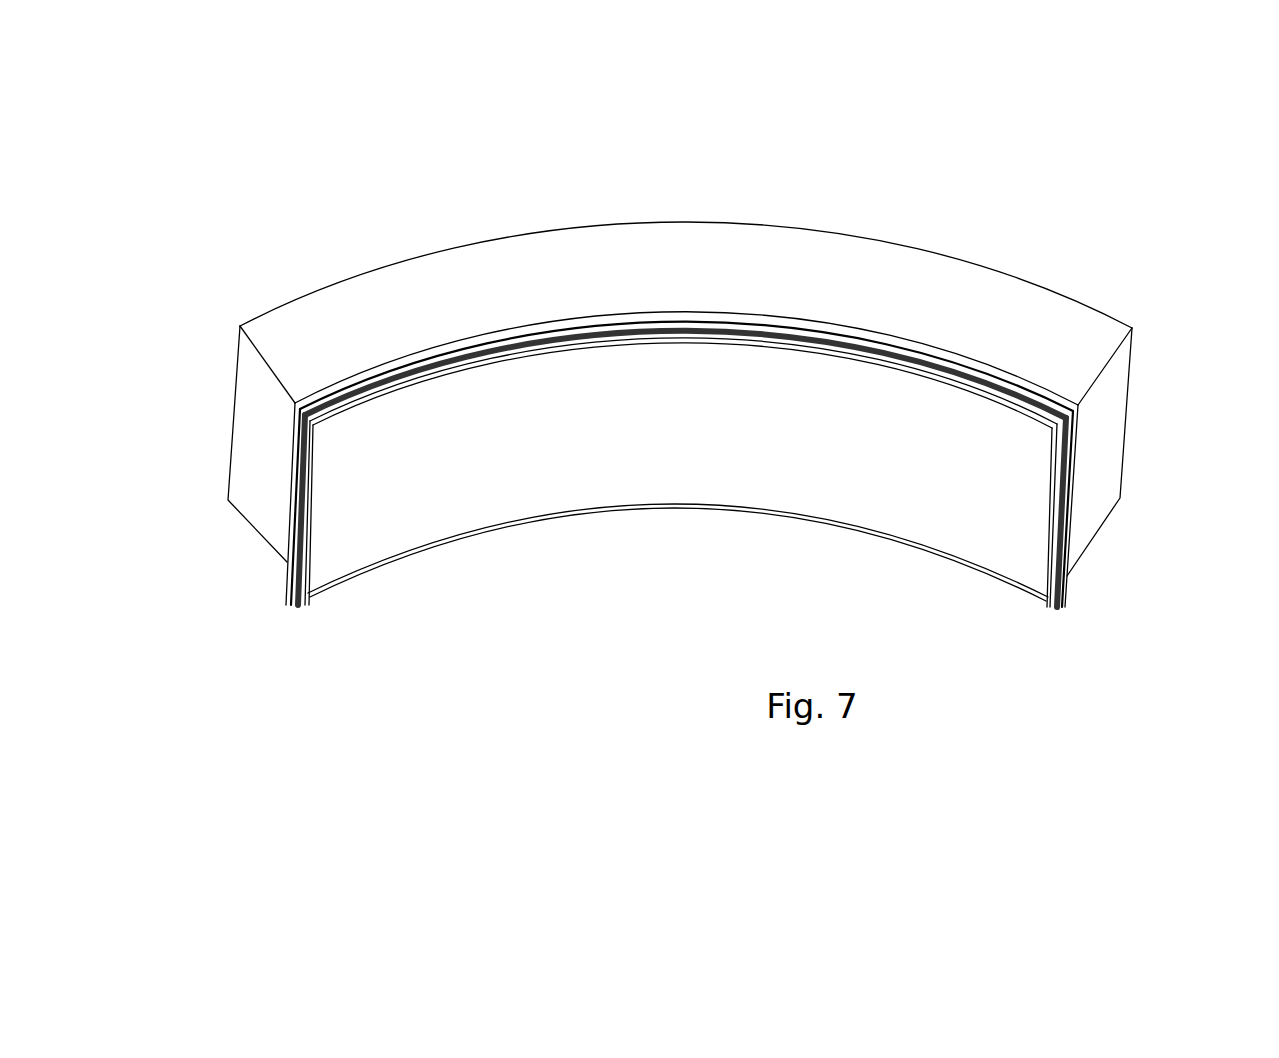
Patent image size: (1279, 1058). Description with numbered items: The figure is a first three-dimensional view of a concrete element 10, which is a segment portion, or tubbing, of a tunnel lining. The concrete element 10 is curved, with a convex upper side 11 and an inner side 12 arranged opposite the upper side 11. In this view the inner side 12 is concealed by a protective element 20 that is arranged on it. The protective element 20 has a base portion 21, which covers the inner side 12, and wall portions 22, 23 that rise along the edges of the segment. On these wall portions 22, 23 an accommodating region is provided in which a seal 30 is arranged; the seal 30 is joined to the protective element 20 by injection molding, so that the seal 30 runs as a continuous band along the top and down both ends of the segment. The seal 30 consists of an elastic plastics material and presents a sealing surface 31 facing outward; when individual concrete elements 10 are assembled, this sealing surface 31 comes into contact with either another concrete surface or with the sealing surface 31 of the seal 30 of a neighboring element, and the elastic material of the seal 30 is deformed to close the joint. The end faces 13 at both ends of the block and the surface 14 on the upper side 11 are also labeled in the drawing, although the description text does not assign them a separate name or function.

The concrete element 10 is at (405, 176).
The upper side 11 is at (780, 206).
The inner side 12 is at (453, 495).
The side wall 13 is at (260, 479).
The top surface 14 is at (856, 277).
The protective element 20 is at (678, 448).
The base portion 21 is at (568, 452).
The wall portion 22 is at (288, 563).
The wall portion 23 is at (947, 353).
The seal 30 is at (680, 328).
The sealing surface 31 is at (308, 598).